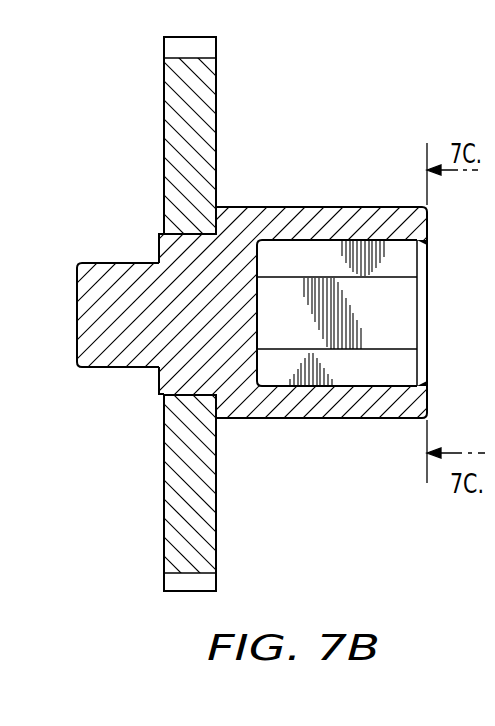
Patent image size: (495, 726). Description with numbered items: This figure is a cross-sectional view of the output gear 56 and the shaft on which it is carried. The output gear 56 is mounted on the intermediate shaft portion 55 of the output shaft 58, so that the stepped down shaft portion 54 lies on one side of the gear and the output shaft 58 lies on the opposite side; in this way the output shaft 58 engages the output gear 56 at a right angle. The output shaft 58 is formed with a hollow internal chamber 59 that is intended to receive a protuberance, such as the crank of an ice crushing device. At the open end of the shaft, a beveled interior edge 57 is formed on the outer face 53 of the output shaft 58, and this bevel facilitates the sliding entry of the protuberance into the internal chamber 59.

The outer face 53 is at (428, 210).
The stepped down shaft portion 54 is at (77, 313).
The intermediate shaft portion 55 is at (180, 233).
The output gear 56 is at (168, 138).
The beveled interior edge 57 is at (427, 241).
The output shaft 58 is at (308, 213).
The hollow internal chamber 59 is at (398, 242).